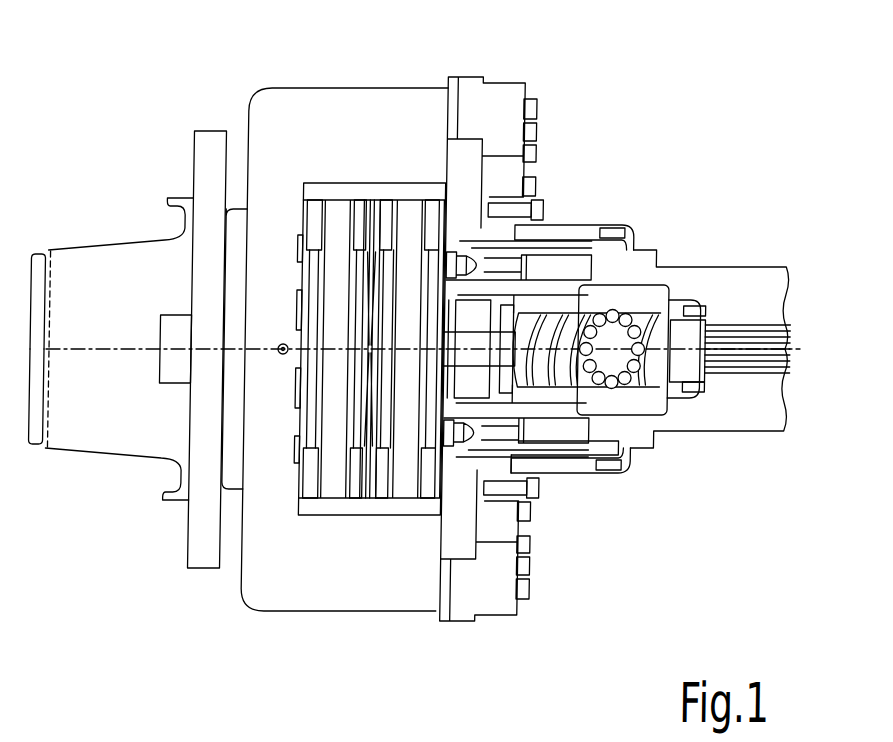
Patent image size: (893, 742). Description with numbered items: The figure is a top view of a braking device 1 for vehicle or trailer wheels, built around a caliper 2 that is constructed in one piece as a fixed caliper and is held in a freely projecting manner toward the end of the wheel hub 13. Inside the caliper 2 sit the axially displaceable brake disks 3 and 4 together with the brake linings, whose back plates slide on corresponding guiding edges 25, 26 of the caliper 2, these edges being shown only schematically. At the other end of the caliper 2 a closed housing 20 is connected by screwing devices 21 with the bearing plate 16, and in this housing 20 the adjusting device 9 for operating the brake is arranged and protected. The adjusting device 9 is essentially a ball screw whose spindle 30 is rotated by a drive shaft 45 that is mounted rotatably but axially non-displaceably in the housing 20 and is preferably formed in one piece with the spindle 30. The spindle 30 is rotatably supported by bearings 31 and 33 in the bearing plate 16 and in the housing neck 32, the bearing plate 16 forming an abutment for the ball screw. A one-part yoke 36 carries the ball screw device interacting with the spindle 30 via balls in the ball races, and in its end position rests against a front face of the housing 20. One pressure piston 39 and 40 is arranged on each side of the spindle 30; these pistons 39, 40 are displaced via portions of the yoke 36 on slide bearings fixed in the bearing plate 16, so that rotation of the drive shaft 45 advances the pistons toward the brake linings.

The braking device 1 is at (591, 93).
The caliper 2 is at (356, 96).
The brake disk 3 is at (335, 215).
The brake disk 4 is at (408, 211).
The adjusting device 9 is at (660, 259).
The wheel hub 13 is at (110, 425).
The bearing plate 16 is at (452, 540).
The housing 20 is at (592, 225).
The screwing devices 21 is at (548, 205).
The guiding edge 25 is at (370, 196).
The guiding edge 26 is at (356, 520).
The spindle 30 is at (548, 452).
The bearing 31 is at (487, 241).
The housing neck 32 is at (690, 313).
The bearing 33 is at (688, 392).
The yoke 36 is at (613, 416).
The pressure piston 39 is at (618, 227).
The pressure piston 40 is at (553, 457).
The drive shaft 45 is at (763, 367).